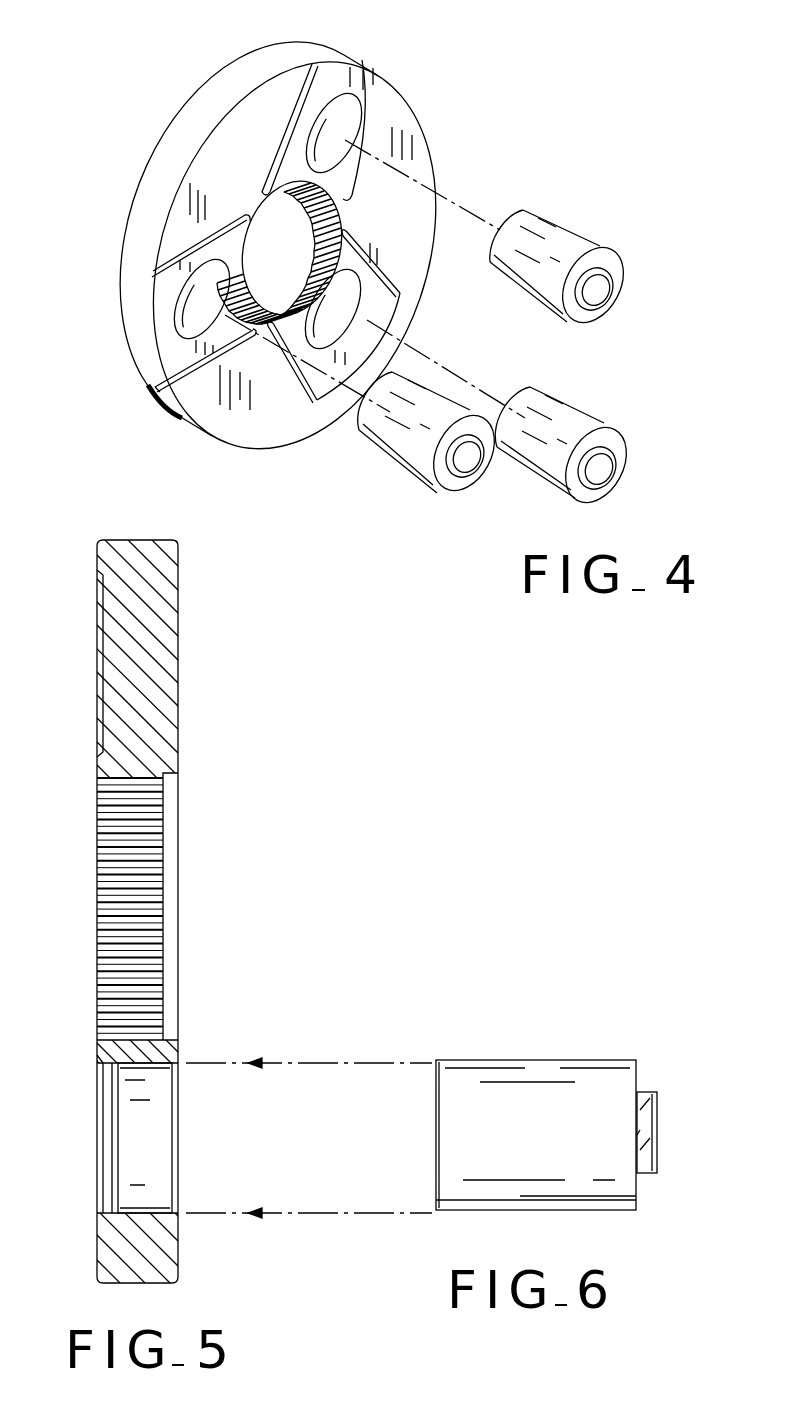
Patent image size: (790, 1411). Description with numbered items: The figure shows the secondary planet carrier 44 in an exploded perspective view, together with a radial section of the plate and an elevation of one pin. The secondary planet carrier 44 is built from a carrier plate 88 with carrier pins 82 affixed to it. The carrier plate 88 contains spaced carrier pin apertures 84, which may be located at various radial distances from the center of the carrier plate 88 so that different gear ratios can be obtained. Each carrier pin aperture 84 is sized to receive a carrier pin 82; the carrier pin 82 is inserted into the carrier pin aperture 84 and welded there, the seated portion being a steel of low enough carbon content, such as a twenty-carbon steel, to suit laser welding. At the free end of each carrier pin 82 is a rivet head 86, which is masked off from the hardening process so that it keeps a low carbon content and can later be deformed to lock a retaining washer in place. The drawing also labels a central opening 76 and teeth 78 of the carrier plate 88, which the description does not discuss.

In FIG. 4, the secondary planet carrier 44 is at (596, 112).
In FIG. 4, the central opening 76 is at (288, 254).
In FIG. 4, the gear teeth 78 is at (272, 208).
In FIG. 5, the gear teeth 78 is at (123, 853).
In FIG. 4, the carrier pin 82 is at (568, 235).
In FIG. 6, the carrier pin 82 is at (548, 1093).
In FIG. 4, the carrier pin aperture 84 is at (330, 118).
In FIG. 5, the carrier pin aperture 84 is at (153, 1137).
In FIG. 4, the rivet head 86 is at (600, 290).
In FIG. 6, the rivet head 86 is at (650, 1090).
In FIG. 4, the carrier plate 88 is at (343, 60).
In FIG. 5, the carrier plate 88 is at (167, 681).